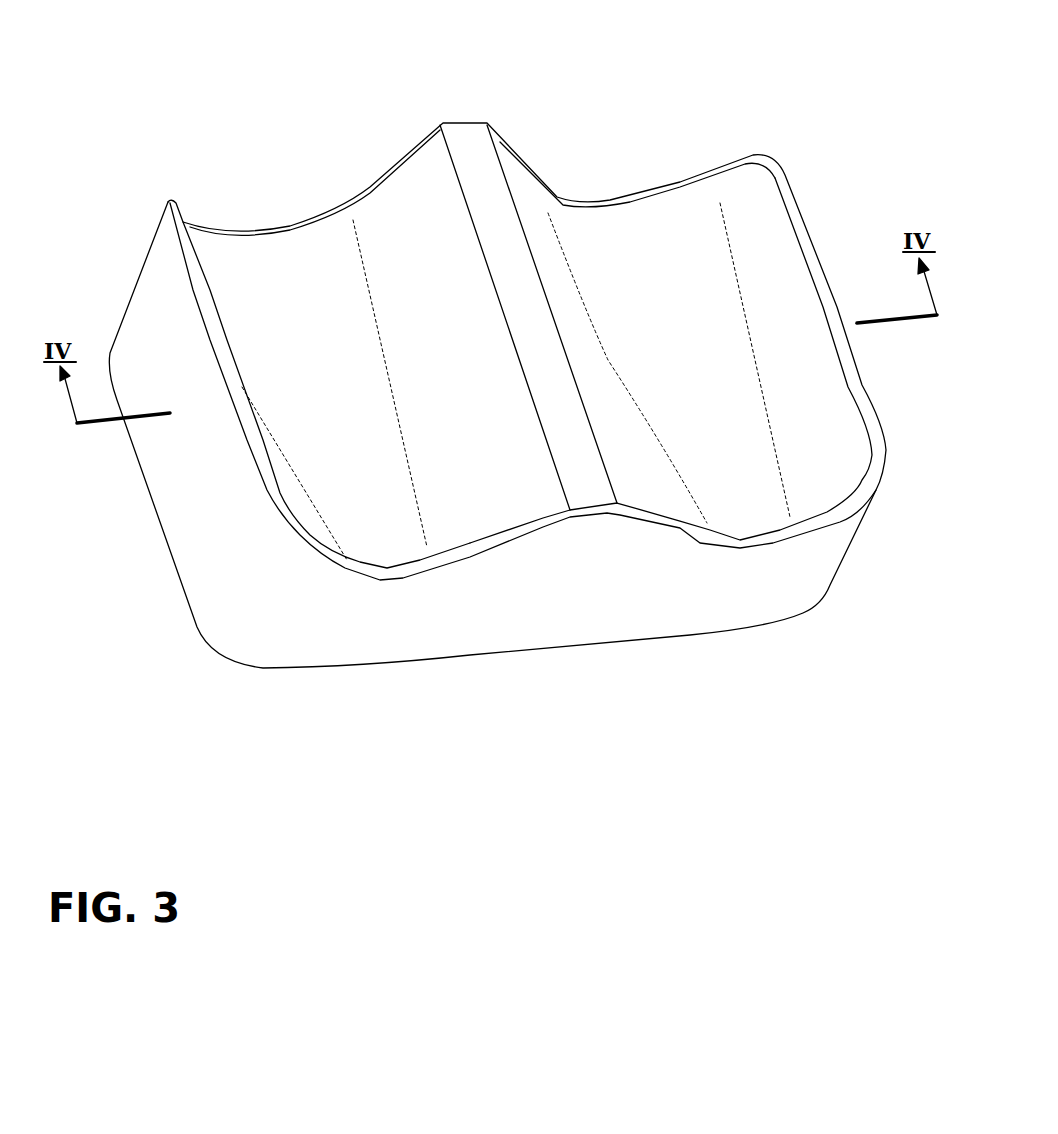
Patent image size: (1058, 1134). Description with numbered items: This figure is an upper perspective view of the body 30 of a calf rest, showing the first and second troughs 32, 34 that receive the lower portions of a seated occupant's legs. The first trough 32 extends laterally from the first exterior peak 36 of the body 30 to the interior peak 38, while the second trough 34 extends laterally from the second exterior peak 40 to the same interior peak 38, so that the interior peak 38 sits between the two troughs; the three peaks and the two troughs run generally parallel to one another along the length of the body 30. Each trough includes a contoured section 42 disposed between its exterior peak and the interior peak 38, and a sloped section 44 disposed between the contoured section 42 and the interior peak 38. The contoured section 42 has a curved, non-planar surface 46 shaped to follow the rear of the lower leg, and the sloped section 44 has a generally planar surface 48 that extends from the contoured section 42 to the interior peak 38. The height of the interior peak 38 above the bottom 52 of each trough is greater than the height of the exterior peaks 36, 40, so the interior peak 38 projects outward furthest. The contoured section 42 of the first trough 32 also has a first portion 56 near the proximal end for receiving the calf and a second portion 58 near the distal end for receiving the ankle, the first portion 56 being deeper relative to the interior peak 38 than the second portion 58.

The body 30 is at (585, 97).
The first trough 32 is at (288, 270).
The second trough 34 is at (678, 242).
The first exterior peak 36 is at (207, 307).
The interior peak 38 is at (560, 450).
The second exterior peak 40 is at (843, 346).
The contoured section 42 is at (333, 453).
The sloped section 44 is at (402, 220).
The curved surface 46 is at (303, 425).
The generally planar surface 48 is at (527, 207).
The bottom 52 is at (253, 333).
The first portion 56 is at (250, 255).
The second portion 58 is at (387, 537).